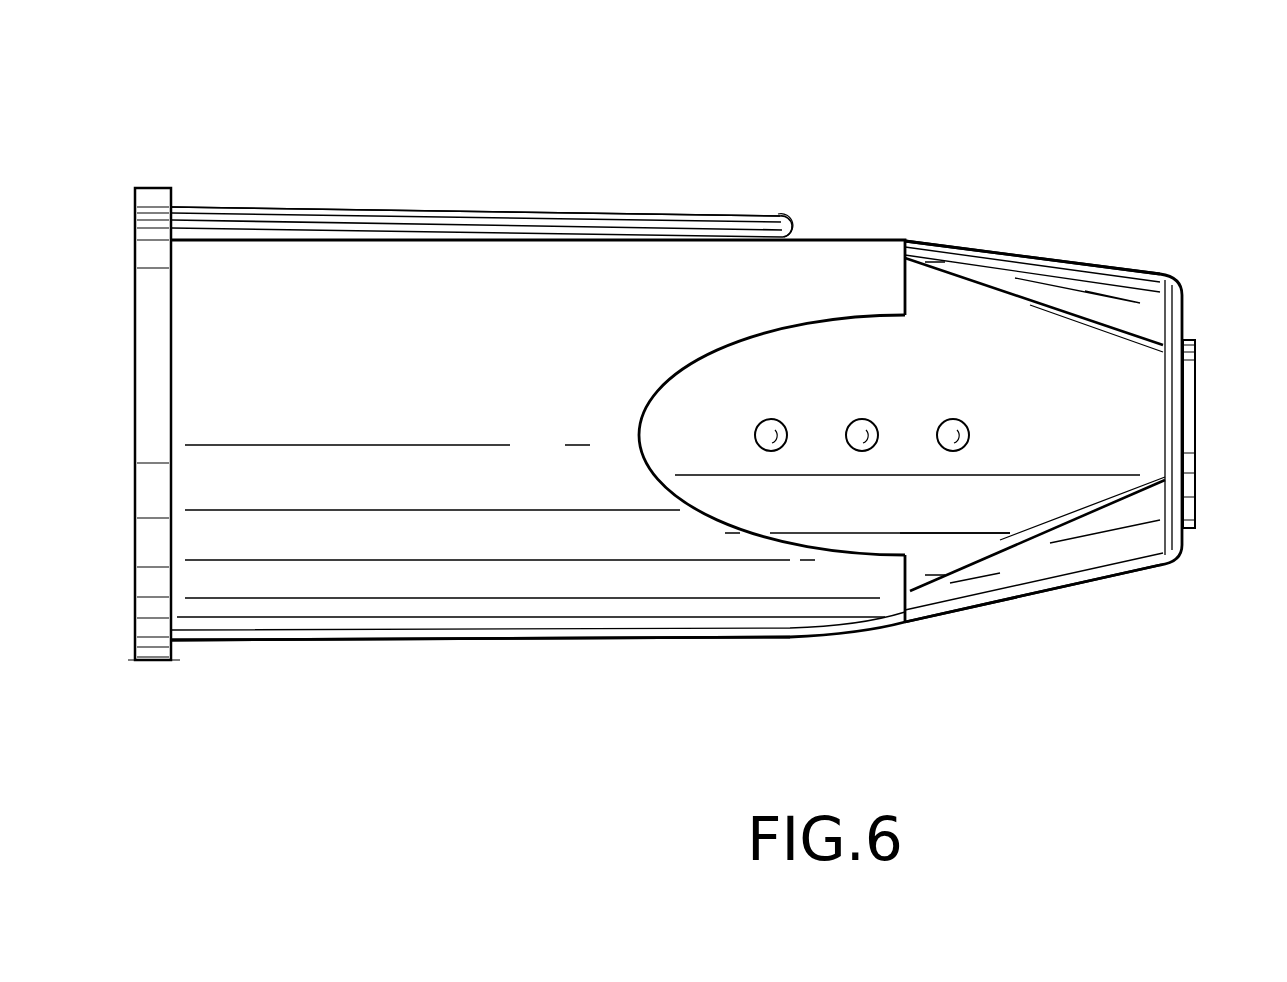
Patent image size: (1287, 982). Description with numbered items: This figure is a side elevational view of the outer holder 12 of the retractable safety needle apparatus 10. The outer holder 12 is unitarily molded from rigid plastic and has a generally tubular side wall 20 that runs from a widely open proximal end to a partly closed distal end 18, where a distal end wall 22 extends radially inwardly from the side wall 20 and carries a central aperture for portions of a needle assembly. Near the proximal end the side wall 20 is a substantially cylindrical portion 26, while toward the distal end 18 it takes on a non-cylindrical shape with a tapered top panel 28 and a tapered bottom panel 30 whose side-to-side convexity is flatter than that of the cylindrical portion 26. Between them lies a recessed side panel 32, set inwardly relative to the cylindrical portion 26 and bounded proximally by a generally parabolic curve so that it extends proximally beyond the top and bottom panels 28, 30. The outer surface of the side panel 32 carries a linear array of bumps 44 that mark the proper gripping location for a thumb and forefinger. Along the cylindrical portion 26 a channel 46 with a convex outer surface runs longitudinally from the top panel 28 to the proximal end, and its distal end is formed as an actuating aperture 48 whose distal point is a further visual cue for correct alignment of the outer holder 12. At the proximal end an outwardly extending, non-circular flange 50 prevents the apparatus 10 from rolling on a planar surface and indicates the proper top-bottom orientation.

The retractable safety needle apparatus 10 is at (963, 167).
The outer holder 12 is at (593, 180).
The distal end 18 is at (1168, 276).
The side wall 20 is at (595, 636).
The distal end wall 22 is at (1192, 320).
The cylindrical portion 26 is at (325, 641).
The top panel 28 is at (1068, 258).
The bottom panel 30 is at (1062, 591).
The side panel 32 is at (1022, 403).
The bumps 44 is at (771, 452).
The channel 46 is at (370, 209).
The actuating aperture 48 is at (786, 226).
The flange 50 is at (163, 187).